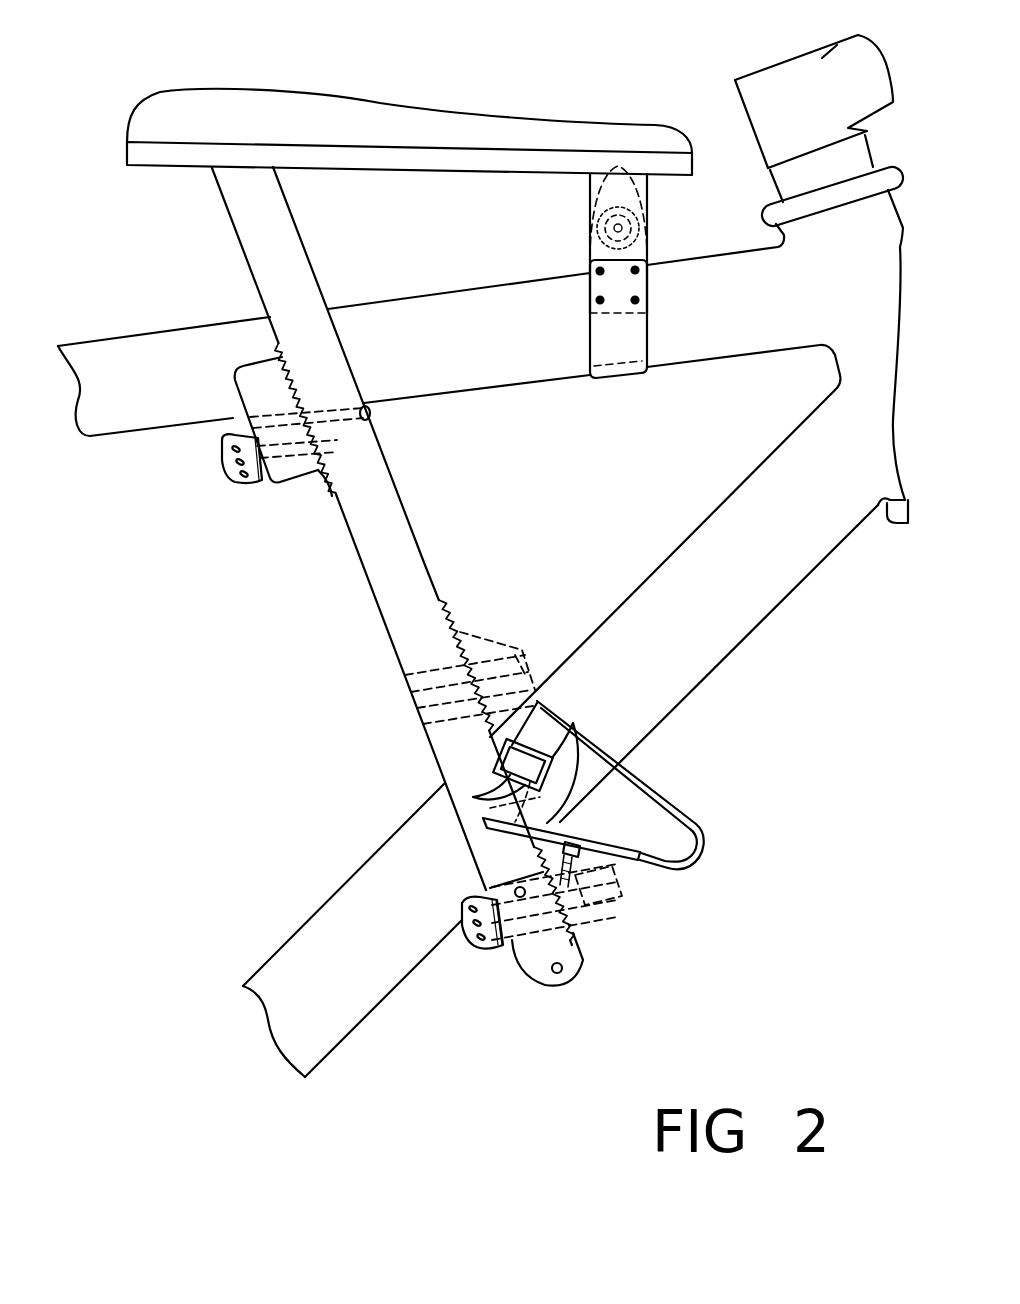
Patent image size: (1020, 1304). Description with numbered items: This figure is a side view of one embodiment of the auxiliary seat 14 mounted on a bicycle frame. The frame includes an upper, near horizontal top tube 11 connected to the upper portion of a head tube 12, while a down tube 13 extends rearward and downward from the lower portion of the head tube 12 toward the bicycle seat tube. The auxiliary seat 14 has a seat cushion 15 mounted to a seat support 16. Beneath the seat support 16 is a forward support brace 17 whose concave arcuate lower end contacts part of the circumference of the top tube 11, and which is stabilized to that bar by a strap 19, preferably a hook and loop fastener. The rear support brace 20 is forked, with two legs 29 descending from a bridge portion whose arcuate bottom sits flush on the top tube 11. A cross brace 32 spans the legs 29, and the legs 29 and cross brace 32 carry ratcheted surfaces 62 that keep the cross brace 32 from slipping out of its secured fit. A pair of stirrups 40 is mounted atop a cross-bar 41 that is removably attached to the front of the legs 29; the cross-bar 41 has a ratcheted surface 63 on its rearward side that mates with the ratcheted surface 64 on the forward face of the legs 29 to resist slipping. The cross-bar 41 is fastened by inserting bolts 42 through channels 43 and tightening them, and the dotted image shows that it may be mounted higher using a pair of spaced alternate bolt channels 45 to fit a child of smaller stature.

The top tube 11 is at (110, 438).
The head tube 12 is at (862, 297).
The down tube 13 is at (315, 918).
The auxiliary seat 14 is at (148, 98).
The seat cushion 15 is at (398, 105).
The seat support 16 is at (165, 167).
The forward support brace 17 is at (587, 187).
The strap 19 is at (610, 347).
The rear support brace 20 is at (238, 235).
The rear support legs 29 is at (385, 620).
The cross brace 32 is at (307, 473).
The stirrups 40 is at (683, 800).
The cross-bar 41 is at (620, 897).
The bolts 42 is at (467, 927).
The channels 43 is at (538, 937).
The alternate bolt channels 45 is at (430, 726).
The ratcheted surfaces 62 is at (327, 477).
The ratcheted surface 63 is at (473, 638).
The ratcheted surface 64 is at (445, 622).